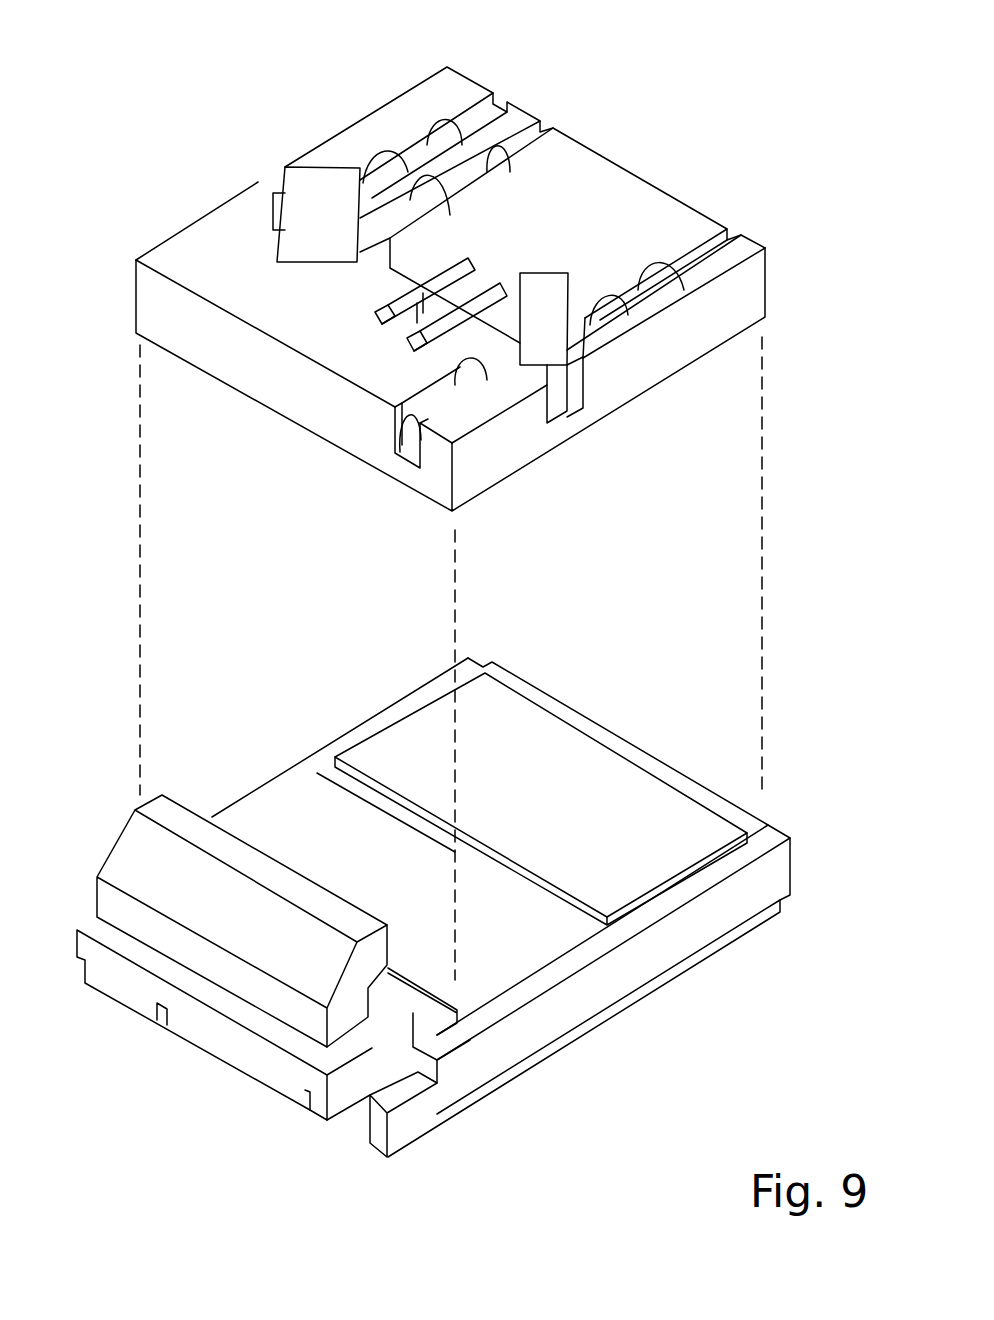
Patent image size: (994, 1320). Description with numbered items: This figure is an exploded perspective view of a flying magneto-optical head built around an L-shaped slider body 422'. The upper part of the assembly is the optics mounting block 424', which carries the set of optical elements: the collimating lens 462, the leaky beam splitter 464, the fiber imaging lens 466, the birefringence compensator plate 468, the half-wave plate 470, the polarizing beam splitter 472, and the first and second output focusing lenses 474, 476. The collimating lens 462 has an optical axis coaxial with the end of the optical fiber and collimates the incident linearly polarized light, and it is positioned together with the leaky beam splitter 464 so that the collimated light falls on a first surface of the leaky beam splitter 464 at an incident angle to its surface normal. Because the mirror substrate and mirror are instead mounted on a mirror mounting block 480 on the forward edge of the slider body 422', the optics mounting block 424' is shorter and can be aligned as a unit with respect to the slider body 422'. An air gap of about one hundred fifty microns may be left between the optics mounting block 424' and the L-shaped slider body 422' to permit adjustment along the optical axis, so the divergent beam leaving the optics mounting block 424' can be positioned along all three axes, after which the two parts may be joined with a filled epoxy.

The optics mounting block 424' is at (461, 285).
The L-shaped slider body 422' is at (457, 907).
The collimating lens 462 is at (637, 277).
The leaky beam splitter 464 is at (558, 383).
The fiber imaging lens 466 is at (420, 428).
The birefringence compensator plate 468 is at (440, 360).
The half-wave plate 470 is at (393, 323).
The polarizing beam splitter 472 is at (300, 187).
The first output focusing lens 474 is at (475, 167).
The second output focusing lens 476 is at (413, 147).
The mirror mounting block 480 is at (138, 852).